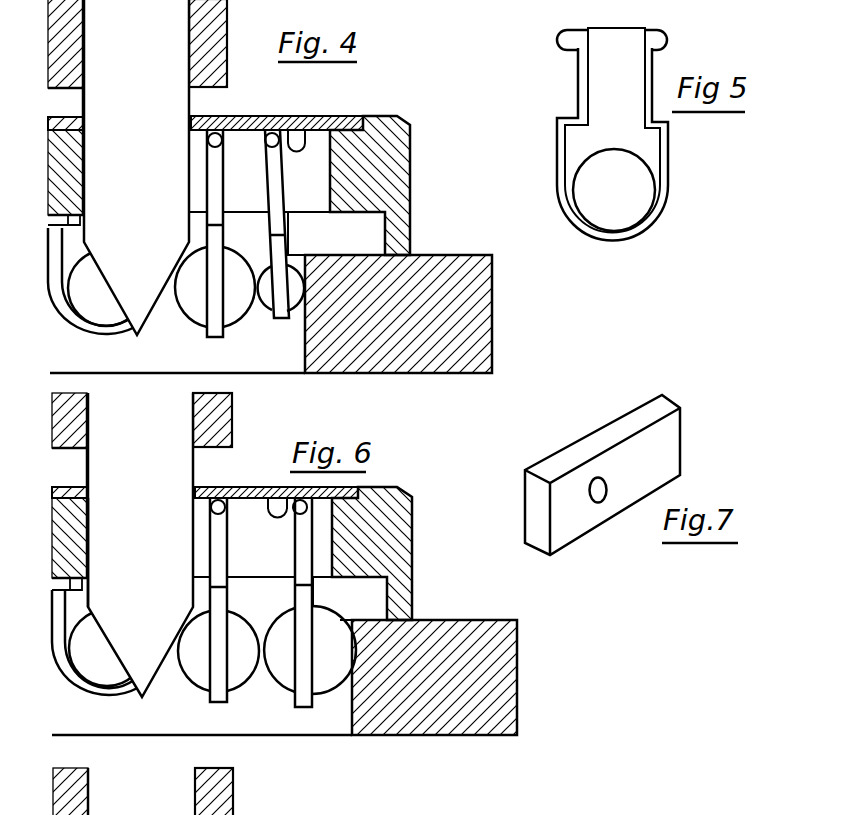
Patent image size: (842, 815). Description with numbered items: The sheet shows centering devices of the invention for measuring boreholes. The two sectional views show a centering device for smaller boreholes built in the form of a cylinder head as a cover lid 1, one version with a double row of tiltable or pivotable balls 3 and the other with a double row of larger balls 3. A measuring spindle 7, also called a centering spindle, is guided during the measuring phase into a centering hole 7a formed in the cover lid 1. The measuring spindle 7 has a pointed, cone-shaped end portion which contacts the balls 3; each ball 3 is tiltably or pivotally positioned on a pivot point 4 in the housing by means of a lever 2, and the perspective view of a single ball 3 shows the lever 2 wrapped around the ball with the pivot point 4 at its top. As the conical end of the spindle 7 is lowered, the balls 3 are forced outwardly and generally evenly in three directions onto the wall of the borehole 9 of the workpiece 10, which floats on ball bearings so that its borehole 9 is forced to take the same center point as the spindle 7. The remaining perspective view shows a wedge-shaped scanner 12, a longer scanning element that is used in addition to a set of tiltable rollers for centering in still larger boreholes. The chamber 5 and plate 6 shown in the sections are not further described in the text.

In FIG. 4, the cover lid 1 is at (392, 177).
In FIG. 6, the cover lid 1 is at (398, 565).
In FIG. 4, the lever 2 is at (72, 327).
In FIG. 5, the lever 2 is at (645, 138).
In FIG. 6, the lever 2 is at (75, 690).
In FIG. 4, the tiltable or pivotable ball 3 is at (195, 302).
In FIG. 5, the tiltable or pivotable ball 3 is at (625, 187).
In FIG. 6, the tiltable or pivotable ball 3 is at (103, 663).
In FIG. 4, the pivot point 4 is at (268, 117).
In FIG. 5, the pivot point 4 is at (560, 40).
In FIG. 6, the pivot point 4 is at (280, 492).
In FIG. 4, the chamber 5 is at (307, 172).
In FIG. 6, the chamber 5 is at (320, 530).
In FIG. 4, the plate 6 is at (335, 117).
In FIG. 6, the plate 6 is at (353, 485).
In FIG. 4, the measuring spindle 7 is at (145, 120).
In FIG. 6, the measuring spindle 7 is at (155, 497).
In FIG. 6, the centering hole 7a is at (90, 540).
In FIG. 4, the borehole 9 is at (308, 332).
In FIG. 6, the borehole 9 is at (353, 688).
In FIG. 4, the workpiece 10 is at (413, 333).
In FIG. 6, the workpiece 10 is at (440, 693).
In FIG. 7, the wedge-shaped scanner 12 is at (580, 508).